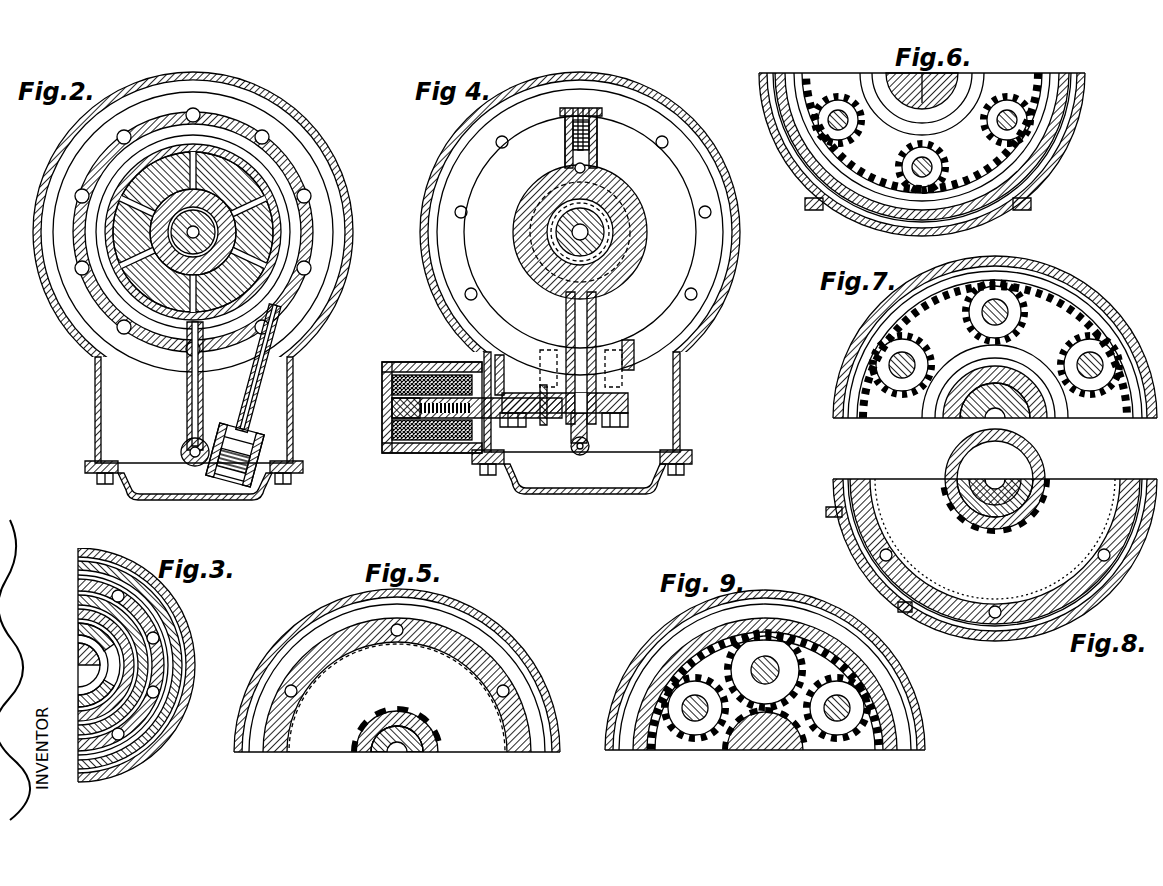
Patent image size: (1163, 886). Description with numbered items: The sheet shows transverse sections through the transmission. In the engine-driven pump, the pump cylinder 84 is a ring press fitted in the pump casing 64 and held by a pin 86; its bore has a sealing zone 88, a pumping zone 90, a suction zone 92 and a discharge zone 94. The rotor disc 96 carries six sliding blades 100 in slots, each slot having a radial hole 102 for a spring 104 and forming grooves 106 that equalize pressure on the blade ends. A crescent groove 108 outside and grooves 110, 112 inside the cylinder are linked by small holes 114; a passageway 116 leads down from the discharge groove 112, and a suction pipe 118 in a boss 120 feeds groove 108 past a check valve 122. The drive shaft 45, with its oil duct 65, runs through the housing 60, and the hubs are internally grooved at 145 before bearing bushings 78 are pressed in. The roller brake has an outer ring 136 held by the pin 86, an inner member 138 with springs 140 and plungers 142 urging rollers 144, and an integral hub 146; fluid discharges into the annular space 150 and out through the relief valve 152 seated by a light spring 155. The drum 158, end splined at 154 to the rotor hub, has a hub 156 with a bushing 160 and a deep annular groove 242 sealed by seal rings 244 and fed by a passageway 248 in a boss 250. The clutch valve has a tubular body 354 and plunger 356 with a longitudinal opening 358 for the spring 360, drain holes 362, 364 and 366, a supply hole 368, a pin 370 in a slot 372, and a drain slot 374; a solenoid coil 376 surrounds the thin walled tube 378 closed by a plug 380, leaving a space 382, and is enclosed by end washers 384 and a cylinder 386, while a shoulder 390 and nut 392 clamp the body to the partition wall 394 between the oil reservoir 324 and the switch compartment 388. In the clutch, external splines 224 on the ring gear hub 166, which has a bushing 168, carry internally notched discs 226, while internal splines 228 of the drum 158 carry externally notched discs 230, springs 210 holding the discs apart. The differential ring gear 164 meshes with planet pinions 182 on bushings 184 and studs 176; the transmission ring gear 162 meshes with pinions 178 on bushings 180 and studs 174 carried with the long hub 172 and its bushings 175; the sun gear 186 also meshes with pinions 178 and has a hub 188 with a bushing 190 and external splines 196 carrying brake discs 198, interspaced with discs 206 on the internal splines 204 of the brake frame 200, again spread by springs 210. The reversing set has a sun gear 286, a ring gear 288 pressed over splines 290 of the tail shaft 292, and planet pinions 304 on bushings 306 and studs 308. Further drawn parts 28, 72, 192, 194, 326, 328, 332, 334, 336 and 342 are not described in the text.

In FIG. 2, the transmission housing 60 is at (250, 90).
In FIG. 4, the transmission housing 60 is at (648, 96).
In FIG. 6, the transmission housing 60 is at (1086, 92).
In FIG. 7, the transmission housing 60 is at (852, 338).
In FIG. 8, the transmission housing 60 is at (835, 500).
In FIG. 5, the transmission housing 60 is at (440, 598).
In FIG. 9, the transmission housing 60 is at (770, 594).
In FIG. 2, the pump casing 64 is at (300, 170).
In FIG. 4, the pump casing 64 is at (660, 176).
In FIG. 3, the pump casing 64 is at (125, 565).
In FIG. 2, the housing flange 72 is at (304, 236).
In FIG. 4, the housing flange 72 is at (698, 232).
In FIG. 2, the pump cylinder 84 is at (118, 180).
In FIG. 2, the pin 86 is at (86, 236).
In FIG. 2, the pumping zone 90 is at (92, 246).
In FIG. 2, the suction zone 92 is at (190, 118).
In FIG. 2, the disc 96 is at (100, 200).
In FIG. 2, the rotor blades 100 is at (258, 132).
In FIG. 2, the grooves 106 is at (310, 263).
In FIG. 2, the crescent shaped groove 108 is at (302, 188).
In FIG. 2, the discharge zone groove 112 is at (150, 328).
In FIG. 2, the small holes 114 is at (245, 142).
In FIG. 2, the suction zone groove 110 is at (165, 140).
In FIG. 2, the discharge zone 94 is at (182, 330).
In FIG. 2, the sector 28 is at (182, 200).
In FIG. 2, the drive shaft 45 is at (214, 190).
In FIG. 4, the drive shaft 45 is at (560, 233).
In FIG. 6, the drive shaft 45 is at (924, 100).
In FIG. 7, the drive shaft 45 is at (992, 422).
In FIG. 8, the drive shaft 45 is at (985, 480).
In FIG. 3, the drive shaft 45 is at (90, 640).
In FIG. 5, the drive shaft 45 is at (410, 752).
In FIG. 4, the oil duct 65 is at (588, 228).
In FIG. 6, the oil duct 65 is at (935, 95).
In FIG. 7, the oil duct 65 is at (985, 418).
In FIG. 8, the oil duct 65 is at (1005, 480).
In FIG. 3, the oil duct 65 is at (100, 680).
In FIG. 5, the oil duct 65 is at (397, 752).
In FIG. 2, the end splines 154 is at (232, 200).
In FIG. 2, the radial hole 102 is at (150, 236).
In FIG. 2, the internal grooves 145 is at (246, 234).
In FIG. 2, the springs 104 is at (176, 278).
In FIG. 2, the integral hub 146 is at (228, 272).
In FIG. 2, the sealing zone 88 is at (278, 236).
In FIG. 2, the passageway 116 is at (188, 372).
In FIG. 2, the suction pipe 118 is at (252, 374).
In FIG. 2, the boss 120 is at (268, 362).
In FIG. 2, the check valve 122 is at (222, 480).
In FIG. 2, the rod end 332 is at (188, 418).
In FIG. 4, the rod end 332 is at (586, 455).
In FIG. 2, the rod 336 is at (190, 398).
In FIG. 2, the oil reservoir 324 is at (105, 434).
In FIG. 4, the oil reservoir 324 is at (682, 382).
In FIG. 2, the pan 326 is at (108, 470).
In FIG. 4, the pan 326 is at (692, 462).
In FIG. 2, the bolt 328 is at (97, 479).
In FIG. 4, the bolt 328 is at (686, 474).
In FIG. 4, the relief valve 152 is at (582, 104).
In FIG. 4, the light spring 155 is at (595, 136).
In FIG. 4, the hub 156 is at (556, 213).
In FIG. 3, the hub 156 is at (175, 636).
In FIG. 4, the bearing bushing 160 is at (600, 230).
In FIG. 3, the bearing bushing 160 is at (105, 640).
In FIG. 4, the deep annular groove 242 is at (528, 222).
In FIG. 4, the seal rings 244 is at (528, 262).
In FIG. 4, the passageway 248 is at (568, 300).
In FIG. 4, the boss 250 is at (594, 300).
In FIG. 4, the longitudinal opening 358 is at (546, 350).
In FIG. 4, the transverse drain hole 366 is at (626, 340).
In FIG. 4, the block 334 is at (622, 355).
In FIG. 4, the tubular body portion 354 is at (625, 380).
In FIG. 4, the plunger 356 is at (628, 398).
In FIG. 4, the transverse fluid supply hole 368 is at (628, 408).
In FIG. 4, the spring 360 is at (499, 356).
In FIG. 4, the pin 370 is at (539, 355).
In FIG. 4, the longitudinal slot 372 is at (540, 392).
In FIG. 4, the drain slot 374 is at (512, 427).
In FIG. 4, the transverse drain hole 362 is at (545, 422).
In FIG. 4, the transverse drain hole 364 is at (560, 425).
In FIG. 4, the rod 342 is at (575, 452).
In FIG. 4, the shoulder 390 is at (502, 370).
In FIG. 4, the solenoid coil 376 is at (426, 372).
In FIG. 4, the thin walled tube 378 is at (418, 374).
In FIG. 4, the press fitted plug 380 is at (392, 404).
In FIG. 4, the space 382 is at (430, 418).
In FIG. 4, the metal end washers 384 is at (392, 425).
In FIG. 4, the metal cylinder 386 is at (398, 364).
In FIG. 4, the switch compartment 388 is at (392, 446).
In FIG. 4, the nut 392 is at (482, 440).
In FIG. 4, the partition wall 394 is at (470, 368).
In FIG. 6, the transmission ring gear drum 158 is at (1062, 76).
In FIG. 5, the transmission ring gear drum 158 is at (420, 622).
In FIG. 6, the second ring gear 164 is at (980, 156).
In FIG. 6, the studs 176 is at (908, 164).
In FIG. 6, the planet pinions 182 is at (1010, 106).
In FIG. 6, the bearing bushings 184 is at (836, 108).
In FIG. 6, the ring 192 is at (985, 80).
In FIG. 6, the ring 194 is at (960, 88).
In FIG. 7, the ring gear 162 is at (1035, 288).
In FIG. 7, the long hub 172 is at (962, 420).
In FIG. 8, the long hub 172 is at (1030, 480).
In FIG. 7, the studs 174 is at (1010, 312).
In FIG. 7, the bearing bushings 175 is at (1002, 420).
In FIG. 7, the pinions 178 is at (975, 314).
In FIG. 7, the bearing bushings 180 is at (1088, 352).
In FIG. 7, the sun gear 186 is at (1082, 398).
In FIG. 7, the sun gear hub 188 is at (1046, 415).
In FIG. 8, the sun gear hub 188 is at (1046, 500).
In FIG. 7, the bearing bushing 190 is at (1040, 412).
In FIG. 8, the external splines 196 is at (1040, 517).
In FIG. 8, the internally notched brake discs 198 is at (1030, 525).
In FIG. 8, the brake frame 200 is at (1080, 600).
In FIG. 8, the internal splines 204 is at (1020, 600).
In FIG. 8, the externally notched brake discs 206 is at (1010, 612).
In FIG. 8, the springs 210 is at (994, 605).
In FIG. 5, the springs 210 is at (396, 638).
In FIG. 3, the outer ring 136 is at (170, 620).
In FIG. 3, the inner roller brake member 138 is at (165, 705).
In FIG. 3, the springs 140 is at (140, 682).
In FIG. 3, the plungers 142 is at (150, 665).
In FIG. 3, the rollers 144 is at (160, 650).
In FIG. 3, the annular space 150 is at (125, 762).
In FIG. 3, the bearing bushings 78 is at (86, 700).
In FIG. 5, the hub 166 is at (430, 738).
In FIG. 5, the bearing bushing 168 is at (378, 752).
In FIG. 5, the external splines 224 is at (420, 726).
In FIG. 5, the internally notched clutch discs 226 is at (420, 718).
In FIG. 5, the internal splines 228 is at (445, 632).
In FIG. 5, the externally notched clutch discs 230 is at (460, 640).
In FIG. 9, the reversing sun gear 286 is at (792, 740).
In FIG. 9, the reversing ring gear 288 is at (890, 750).
In FIG. 9, the external splines 290 is at (775, 735).
In FIG. 9, the tail shaft 292 is at (750, 740).
In FIG. 9, the planet pinions 304 is at (842, 732).
In FIG. 9, the bearing bushings 306 is at (695, 722).
In FIG. 9, the studs 308 is at (688, 718).